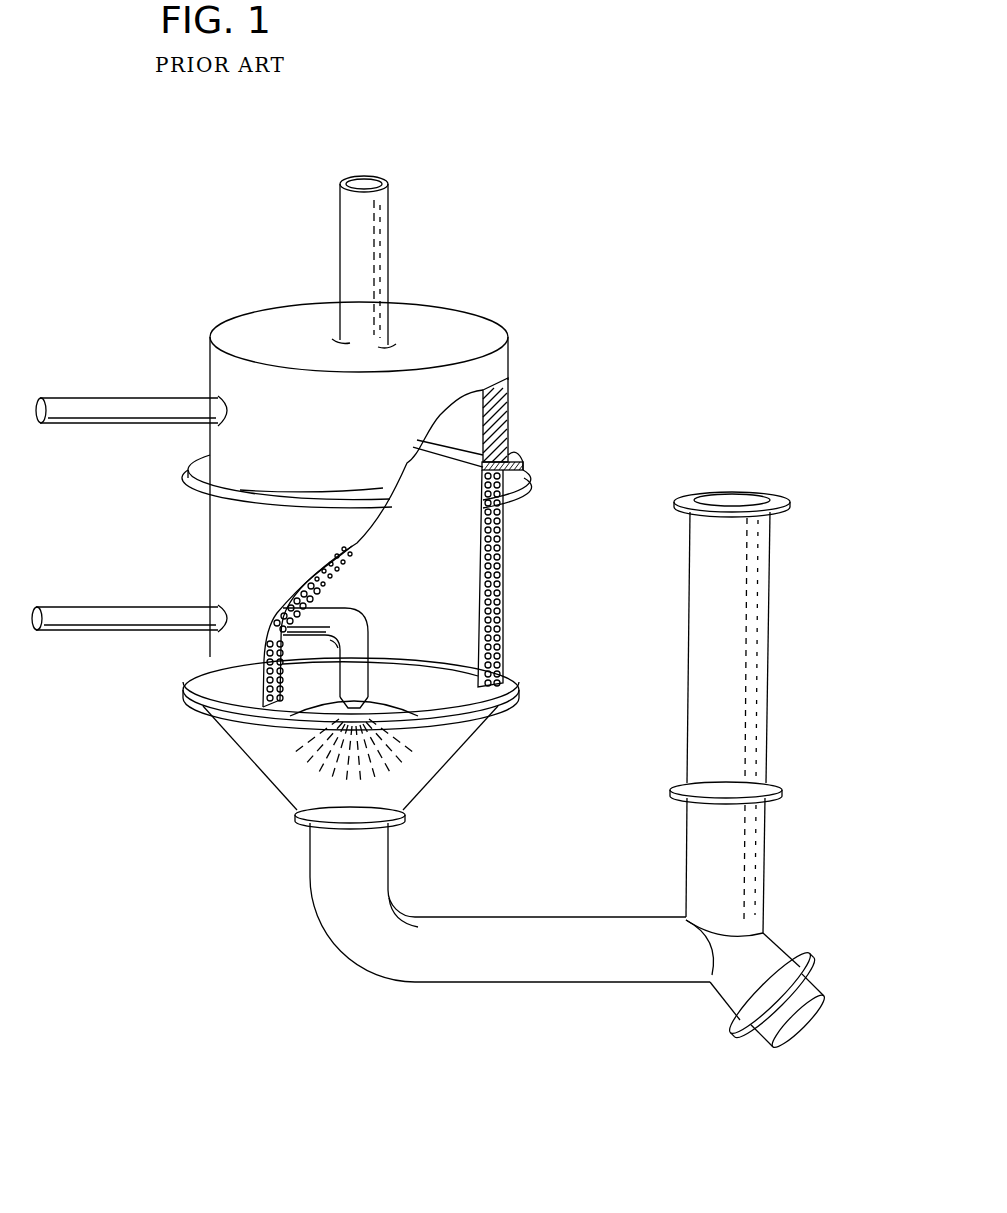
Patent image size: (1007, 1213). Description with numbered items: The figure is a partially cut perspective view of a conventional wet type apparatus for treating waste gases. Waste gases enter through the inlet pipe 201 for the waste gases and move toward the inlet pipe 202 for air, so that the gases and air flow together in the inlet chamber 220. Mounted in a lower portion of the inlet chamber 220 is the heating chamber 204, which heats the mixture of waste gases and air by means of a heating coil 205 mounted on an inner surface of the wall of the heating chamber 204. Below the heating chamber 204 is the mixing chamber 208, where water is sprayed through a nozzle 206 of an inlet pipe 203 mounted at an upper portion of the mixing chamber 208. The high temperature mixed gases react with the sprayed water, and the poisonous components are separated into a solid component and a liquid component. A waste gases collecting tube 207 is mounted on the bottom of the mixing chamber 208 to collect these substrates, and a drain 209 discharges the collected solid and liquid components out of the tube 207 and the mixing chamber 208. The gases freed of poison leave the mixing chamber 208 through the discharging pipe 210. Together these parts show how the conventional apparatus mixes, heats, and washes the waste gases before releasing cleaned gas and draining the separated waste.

The inlet pipe for the waste gases 201 is at (373, 207).
The inlet pipe for air 202 is at (118, 397).
The inlet pipe 203 is at (108, 610).
The heating chamber 204 is at (503, 595).
The heating coil 205 is at (491, 531).
The nozzle 206 is at (302, 705).
The waste gases collecting tube 207 is at (549, 915).
The mixing chamber 208 is at (438, 762).
The drain 209 is at (818, 990).
The discharging pipe 210 is at (757, 670).
The inlet chamber 220 is at (508, 411).